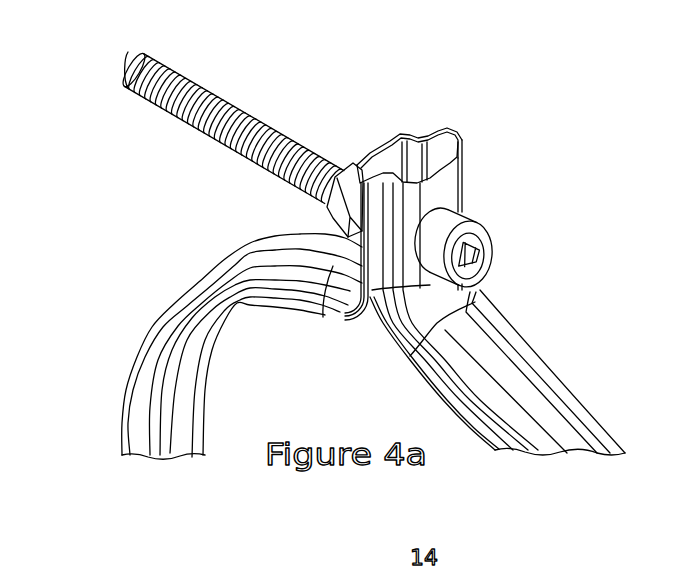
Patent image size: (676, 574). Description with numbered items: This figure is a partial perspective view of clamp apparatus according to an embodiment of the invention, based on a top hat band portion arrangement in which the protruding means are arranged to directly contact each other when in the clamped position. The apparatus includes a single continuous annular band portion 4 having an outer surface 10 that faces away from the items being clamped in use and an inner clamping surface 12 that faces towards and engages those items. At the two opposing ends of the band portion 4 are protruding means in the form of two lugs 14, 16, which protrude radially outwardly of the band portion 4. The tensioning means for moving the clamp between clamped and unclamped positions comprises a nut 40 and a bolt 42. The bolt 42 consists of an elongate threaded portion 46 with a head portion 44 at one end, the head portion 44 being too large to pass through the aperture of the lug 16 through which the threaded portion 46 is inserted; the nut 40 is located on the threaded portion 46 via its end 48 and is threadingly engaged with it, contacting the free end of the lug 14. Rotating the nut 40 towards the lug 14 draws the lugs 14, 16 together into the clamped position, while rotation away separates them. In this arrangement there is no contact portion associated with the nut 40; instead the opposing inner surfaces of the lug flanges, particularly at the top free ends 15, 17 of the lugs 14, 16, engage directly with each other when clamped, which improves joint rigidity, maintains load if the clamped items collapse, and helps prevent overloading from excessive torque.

The band portion 4 is at (134, 304).
The outer surface 10 is at (525, 383).
The inner clamping surface 12 is at (190, 403).
The lug 14 is at (431, 120).
The top free end of lug 15 is at (387, 133).
The lug 16 is at (440, 192).
The top free end of lug 17 is at (465, 152).
The nut 40 is at (340, 195).
The bolt 42 is at (327, 113).
The head portion 44 is at (487, 236).
The threaded portion 46 is at (243, 108).
The end of threaded portion 48 is at (121, 102).